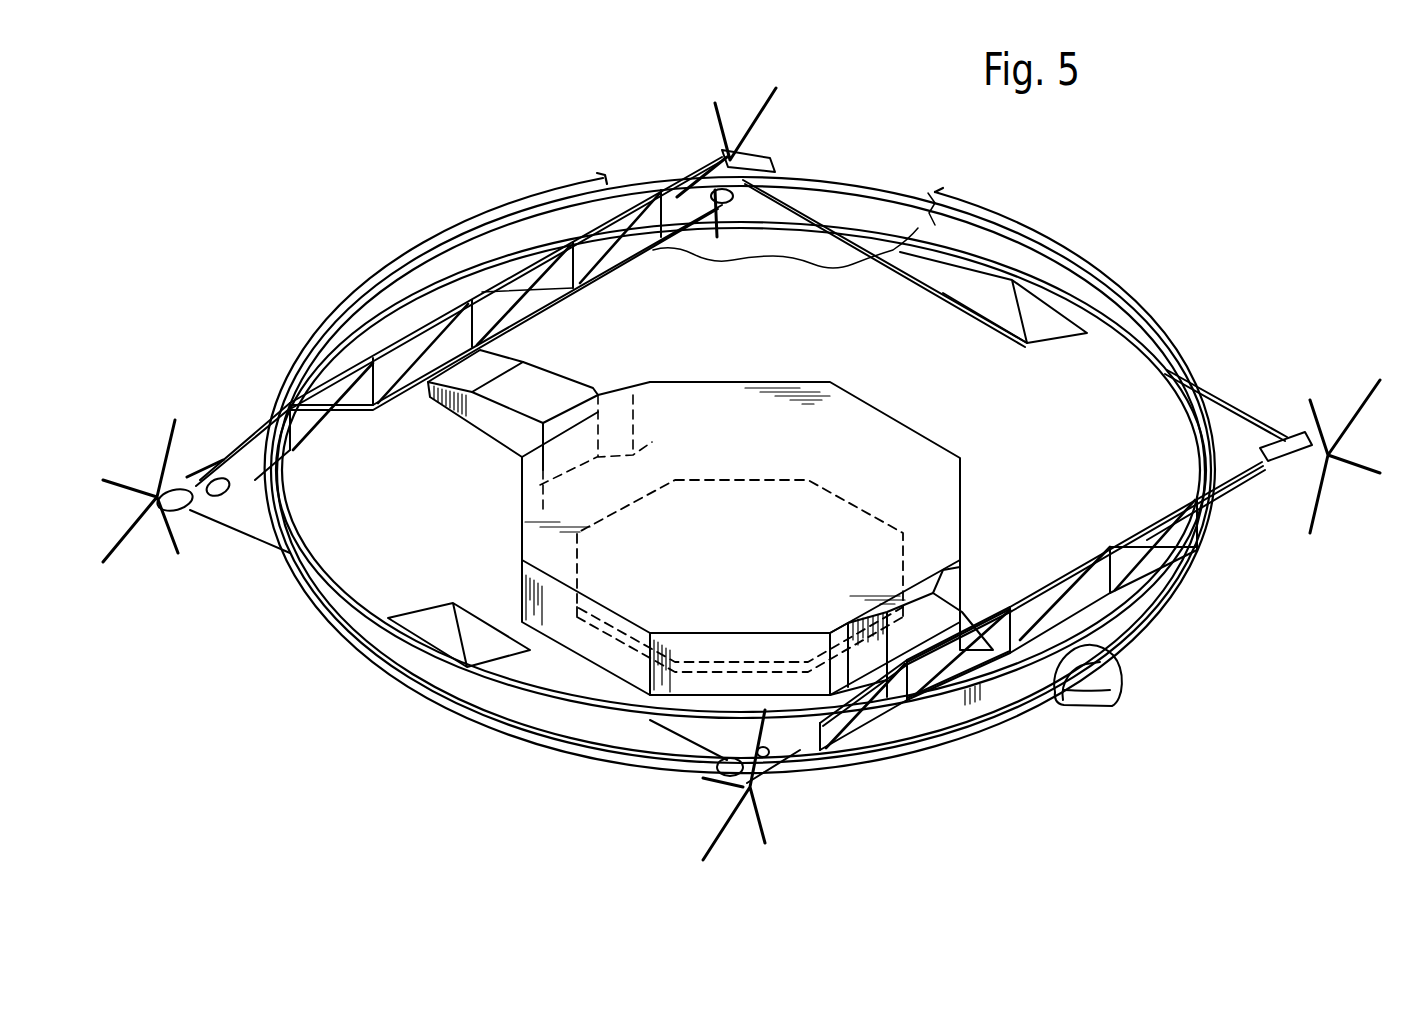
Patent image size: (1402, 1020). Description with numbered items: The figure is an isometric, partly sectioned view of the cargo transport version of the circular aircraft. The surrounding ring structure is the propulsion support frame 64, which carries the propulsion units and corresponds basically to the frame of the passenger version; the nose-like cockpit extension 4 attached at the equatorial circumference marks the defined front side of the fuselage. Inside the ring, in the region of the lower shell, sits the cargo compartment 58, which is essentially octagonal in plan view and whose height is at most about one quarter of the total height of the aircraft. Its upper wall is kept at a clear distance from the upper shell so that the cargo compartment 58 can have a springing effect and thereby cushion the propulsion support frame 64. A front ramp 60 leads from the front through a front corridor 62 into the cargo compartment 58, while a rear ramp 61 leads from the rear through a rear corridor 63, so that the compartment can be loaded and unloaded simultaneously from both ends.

The cockpit extension 4 is at (1120, 697).
The cargo compartment 58 is at (890, 423).
The front ramp 60 is at (930, 675).
The rear ramp 61 is at (565, 435).
The front corridor 62 is at (968, 640).
The rear corridor 63 is at (503, 432).
The propulsion support frame 64 is at (437, 316).